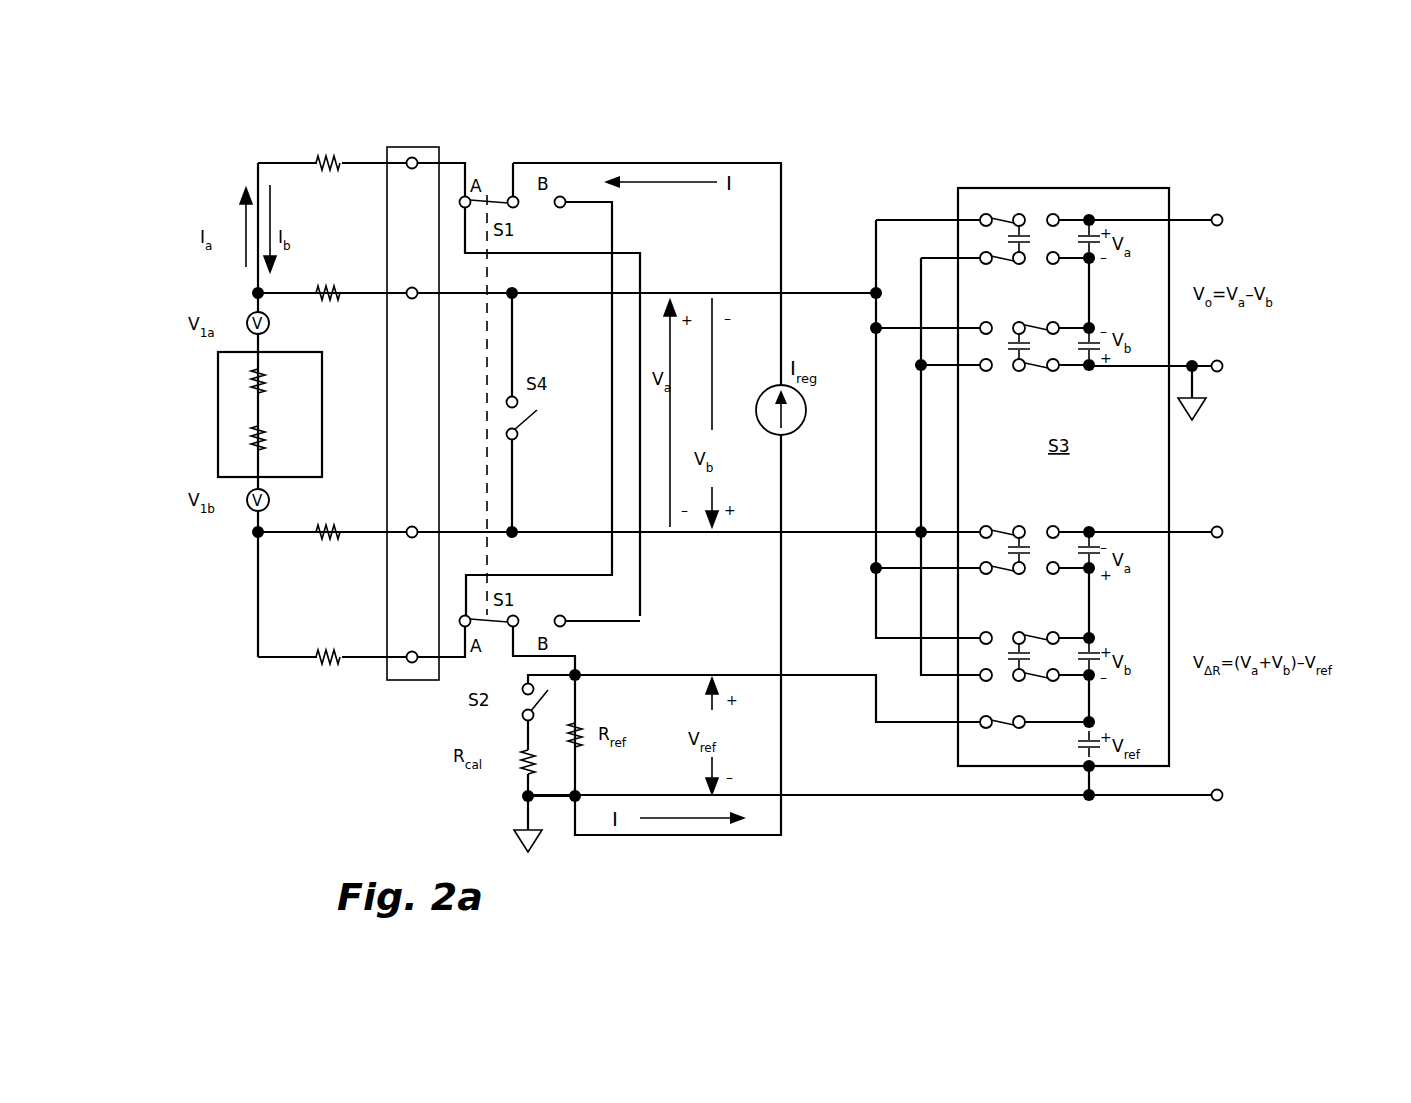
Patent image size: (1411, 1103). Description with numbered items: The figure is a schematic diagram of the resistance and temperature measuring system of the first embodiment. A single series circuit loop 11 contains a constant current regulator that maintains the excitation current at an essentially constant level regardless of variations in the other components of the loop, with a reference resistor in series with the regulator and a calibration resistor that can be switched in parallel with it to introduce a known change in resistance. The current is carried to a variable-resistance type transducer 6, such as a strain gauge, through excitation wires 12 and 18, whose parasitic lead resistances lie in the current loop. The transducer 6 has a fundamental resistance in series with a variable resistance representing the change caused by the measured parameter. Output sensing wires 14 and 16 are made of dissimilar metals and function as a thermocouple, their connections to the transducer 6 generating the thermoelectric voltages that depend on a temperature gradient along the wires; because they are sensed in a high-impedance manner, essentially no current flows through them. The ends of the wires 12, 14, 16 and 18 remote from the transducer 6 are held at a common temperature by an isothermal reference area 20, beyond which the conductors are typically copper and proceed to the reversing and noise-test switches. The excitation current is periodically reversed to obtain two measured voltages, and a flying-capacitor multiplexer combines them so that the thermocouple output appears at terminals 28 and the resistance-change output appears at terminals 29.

The transducer 6 is at (220, 352).
The single series circuit loop 11 is at (622, 158).
The excitation current wire 12 is at (302, 163).
The output sensing wire 14 is at (302, 293).
The output sensing wire 16 is at (302, 531).
The excitation current wire 18 is at (302, 656).
The isothermal reference area 20 is at (444, 382).
The terminals 28 is at (1218, 219).
The terminals 29 is at (1218, 531).